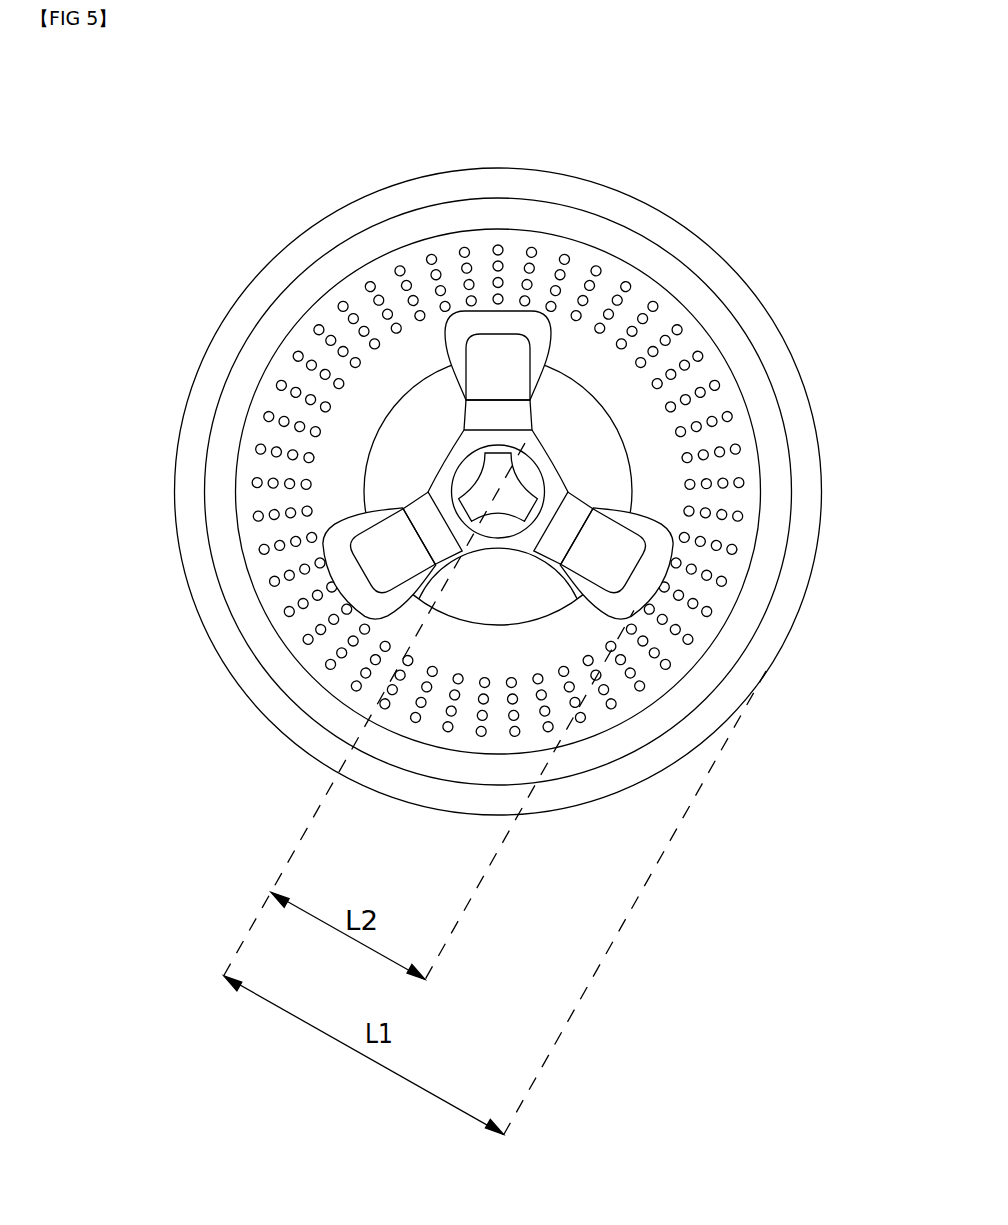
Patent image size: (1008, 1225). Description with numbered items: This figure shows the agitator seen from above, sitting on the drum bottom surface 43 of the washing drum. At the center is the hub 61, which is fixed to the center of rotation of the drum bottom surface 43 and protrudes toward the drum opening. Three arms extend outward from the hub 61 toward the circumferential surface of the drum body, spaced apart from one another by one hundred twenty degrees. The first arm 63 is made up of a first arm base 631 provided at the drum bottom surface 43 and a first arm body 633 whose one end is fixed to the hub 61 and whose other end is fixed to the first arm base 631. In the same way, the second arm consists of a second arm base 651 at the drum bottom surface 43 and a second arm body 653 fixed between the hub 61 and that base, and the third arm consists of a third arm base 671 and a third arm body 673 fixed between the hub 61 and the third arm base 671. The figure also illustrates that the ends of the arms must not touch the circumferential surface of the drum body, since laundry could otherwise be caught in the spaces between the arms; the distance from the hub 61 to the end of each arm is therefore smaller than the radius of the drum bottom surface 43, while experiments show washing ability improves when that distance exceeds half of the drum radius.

The drum bottom surface 43 is at (770, 341).
The hub 61 is at (468, 484).
The first arm 63 is at (260, 561).
The first arm base 631 is at (357, 581).
The first arm body 633 is at (377, 538).
The second arm base 651 is at (475, 330).
The second arm body 653 is at (473, 375).
The third arm base 671 is at (655, 541).
The third arm body 673 is at (562, 497).